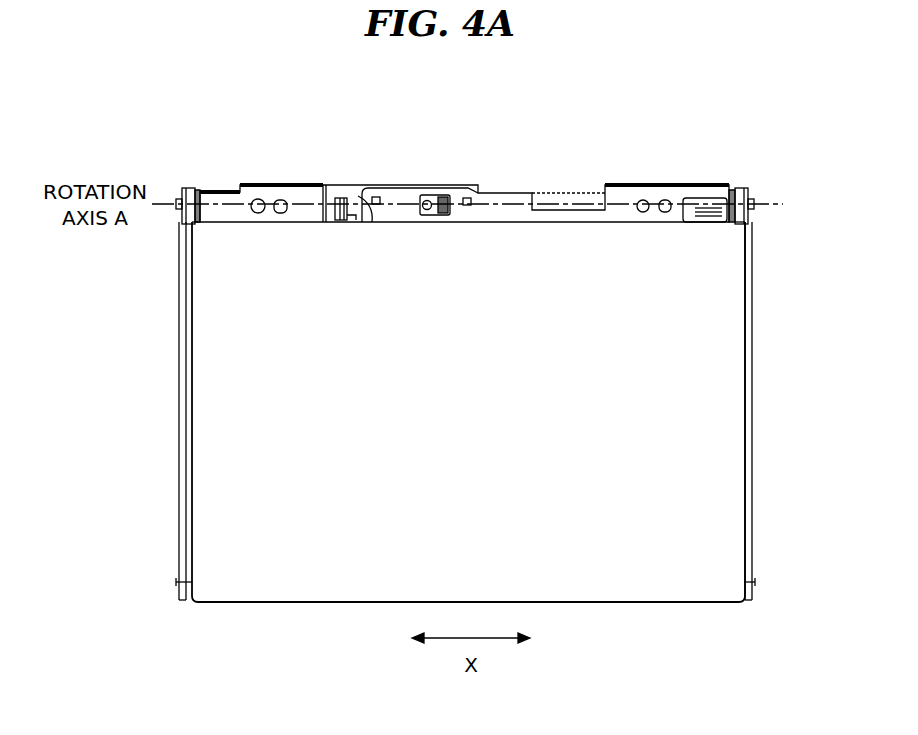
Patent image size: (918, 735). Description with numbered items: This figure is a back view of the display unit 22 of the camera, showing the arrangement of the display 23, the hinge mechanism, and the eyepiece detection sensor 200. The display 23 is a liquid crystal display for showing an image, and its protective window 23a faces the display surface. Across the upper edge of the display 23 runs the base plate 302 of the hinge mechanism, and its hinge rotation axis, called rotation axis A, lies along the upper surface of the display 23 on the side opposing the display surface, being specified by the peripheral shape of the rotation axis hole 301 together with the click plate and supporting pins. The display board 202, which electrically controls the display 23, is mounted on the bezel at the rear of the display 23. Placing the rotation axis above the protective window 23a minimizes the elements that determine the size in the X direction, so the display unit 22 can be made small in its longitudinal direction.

The display unit 22 is at (637, 170).
The display 23 is at (722, 458).
The protective window 23a is at (260, 448).
The eyepiece detection sensor 200 is at (438, 195).
The display board 202 is at (392, 192).
The rotation axis hole 301 is at (268, 192).
The base plate 302 is at (180, 344).